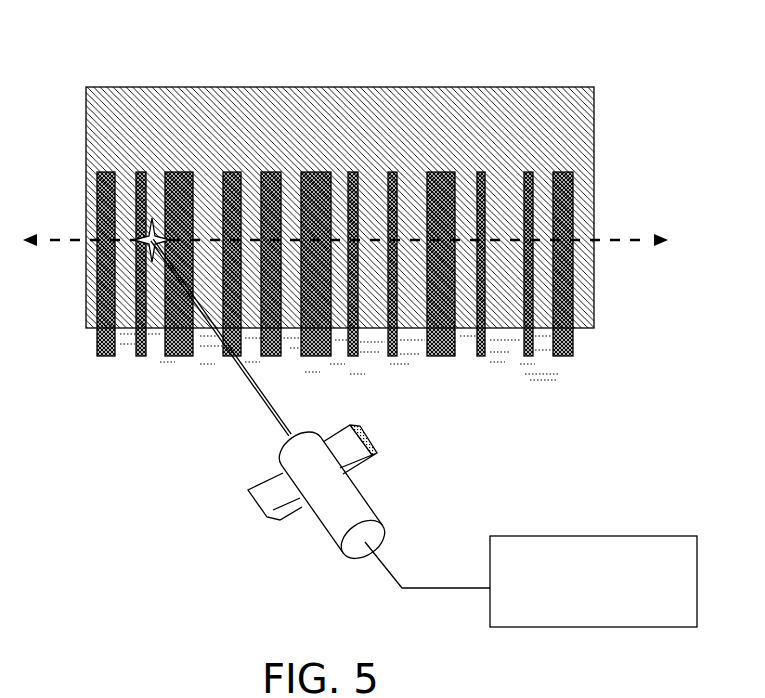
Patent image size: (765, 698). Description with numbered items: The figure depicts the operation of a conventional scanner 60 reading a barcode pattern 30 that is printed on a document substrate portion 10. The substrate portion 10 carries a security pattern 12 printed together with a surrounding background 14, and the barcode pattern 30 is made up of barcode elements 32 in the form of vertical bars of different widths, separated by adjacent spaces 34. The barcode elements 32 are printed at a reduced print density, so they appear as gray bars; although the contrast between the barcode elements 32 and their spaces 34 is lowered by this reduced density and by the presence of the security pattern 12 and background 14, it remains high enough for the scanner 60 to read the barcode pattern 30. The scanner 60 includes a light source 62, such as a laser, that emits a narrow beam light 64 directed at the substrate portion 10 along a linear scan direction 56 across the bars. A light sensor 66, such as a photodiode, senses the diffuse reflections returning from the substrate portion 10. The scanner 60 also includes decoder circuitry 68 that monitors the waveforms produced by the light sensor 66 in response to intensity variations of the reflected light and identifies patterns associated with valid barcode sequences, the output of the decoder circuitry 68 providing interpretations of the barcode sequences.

The document substrate portion 10 is at (366, 236).
The security pattern 12 is at (572, 377).
The background 14 is at (564, 92).
The barcode pattern 30 is at (580, 298).
The barcode elements 32 is at (107, 356).
The spaces 34 is at (316, 80).
The linear scan direction 56 is at (628, 242).
The scanner 60 is at (283, 402).
The light source 62 is at (367, 503).
The narrow beam light 64 is at (332, 428).
The light sensor 66 is at (258, 393).
The decoder circuitry 68 is at (599, 586).